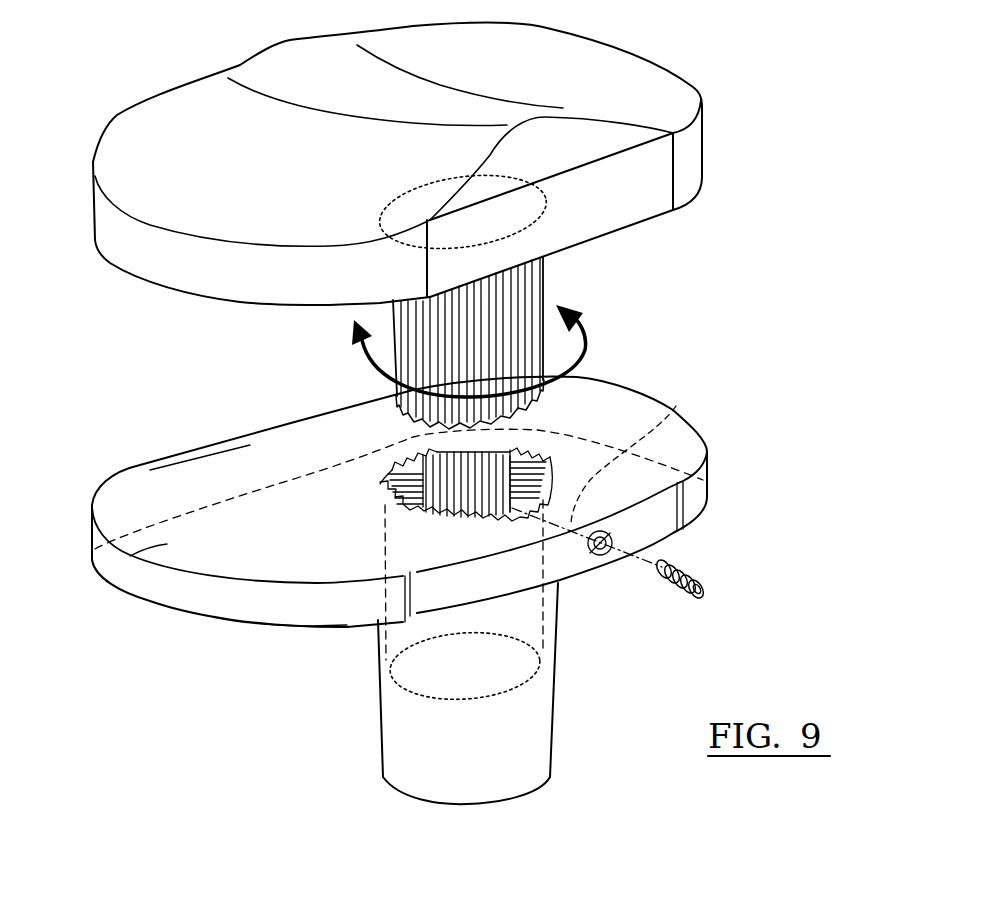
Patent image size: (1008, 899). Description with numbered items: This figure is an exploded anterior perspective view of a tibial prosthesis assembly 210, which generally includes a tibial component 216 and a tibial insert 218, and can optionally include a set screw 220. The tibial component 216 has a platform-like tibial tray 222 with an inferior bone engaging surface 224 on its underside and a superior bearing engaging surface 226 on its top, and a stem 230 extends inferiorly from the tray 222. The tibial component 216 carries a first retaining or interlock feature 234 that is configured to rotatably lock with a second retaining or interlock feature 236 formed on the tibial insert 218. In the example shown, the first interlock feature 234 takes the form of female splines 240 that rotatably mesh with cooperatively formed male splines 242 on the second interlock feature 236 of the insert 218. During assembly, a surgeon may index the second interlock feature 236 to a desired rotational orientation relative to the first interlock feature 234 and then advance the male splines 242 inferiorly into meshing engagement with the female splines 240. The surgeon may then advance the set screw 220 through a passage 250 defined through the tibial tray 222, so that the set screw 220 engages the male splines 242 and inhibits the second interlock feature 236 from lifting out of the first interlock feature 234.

The tibial prosthesis assembly 210 is at (780, 155).
The tibial component 216 is at (678, 447).
The tibial insert 218 is at (620, 73).
The set screw 220 is at (703, 591).
The tibial tray 222 is at (130, 556).
The inferior bone engaging surface 224 is at (230, 622).
The superior bearing engaging surface 226 is at (168, 490).
The stem 230 is at (535, 735).
The first interlock feature 234 is at (522, 462).
The second interlock feature 236 is at (527, 298).
The female splines 240 is at (413, 470).
The male splines 242 is at (393, 307).
The passage 250 is at (678, 404).